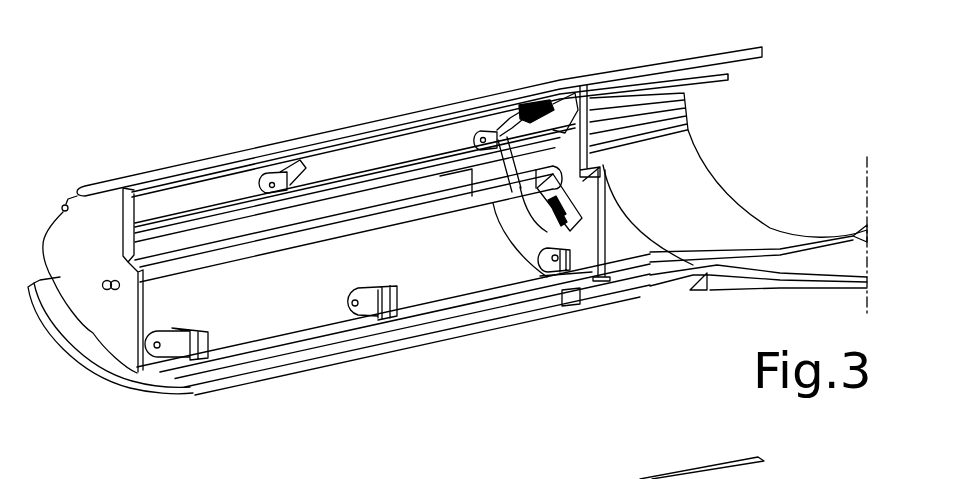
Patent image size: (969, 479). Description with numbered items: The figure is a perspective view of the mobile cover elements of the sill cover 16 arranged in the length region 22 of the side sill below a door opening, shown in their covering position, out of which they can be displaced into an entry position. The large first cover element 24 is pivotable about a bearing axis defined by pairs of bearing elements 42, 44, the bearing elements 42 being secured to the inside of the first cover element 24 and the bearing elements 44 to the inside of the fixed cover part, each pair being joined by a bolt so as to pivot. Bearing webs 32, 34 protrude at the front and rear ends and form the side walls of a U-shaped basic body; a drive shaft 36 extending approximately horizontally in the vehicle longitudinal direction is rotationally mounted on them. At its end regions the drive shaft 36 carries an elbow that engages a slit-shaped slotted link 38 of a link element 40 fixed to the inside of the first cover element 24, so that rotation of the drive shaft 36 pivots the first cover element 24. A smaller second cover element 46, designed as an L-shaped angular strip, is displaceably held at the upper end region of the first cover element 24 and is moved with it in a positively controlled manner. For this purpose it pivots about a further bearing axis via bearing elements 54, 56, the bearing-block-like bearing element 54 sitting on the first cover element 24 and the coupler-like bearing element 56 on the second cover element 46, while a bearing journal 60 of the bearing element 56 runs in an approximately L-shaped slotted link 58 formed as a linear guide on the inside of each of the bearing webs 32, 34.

The length region 22 is at (139, 81).
The second cover element 46 is at (212, 172).
The first cover element 24 is at (347, 268).
The drive shaft 36 is at (327, 240).
The bearing web 32 is at (110, 323).
The bearing element 42 is at (157, 387).
The bearing element 44 is at (200, 357).
The bearing element 54 is at (472, 127).
The bearing element 56 is at (495, 130).
The bearing journal 60 is at (527, 103).
The slotted link 58 is at (577, 93).
The link element 40 is at (592, 240).
The slotted link 38 is at (553, 257).
The bearing web 34 is at (603, 163).
The sill cover 16 is at (722, 223).